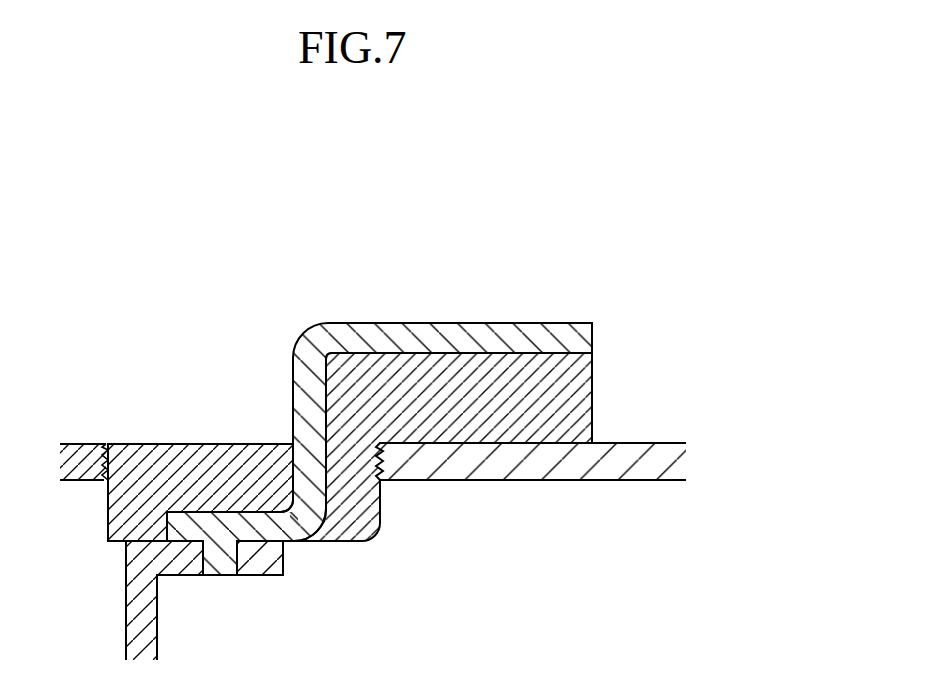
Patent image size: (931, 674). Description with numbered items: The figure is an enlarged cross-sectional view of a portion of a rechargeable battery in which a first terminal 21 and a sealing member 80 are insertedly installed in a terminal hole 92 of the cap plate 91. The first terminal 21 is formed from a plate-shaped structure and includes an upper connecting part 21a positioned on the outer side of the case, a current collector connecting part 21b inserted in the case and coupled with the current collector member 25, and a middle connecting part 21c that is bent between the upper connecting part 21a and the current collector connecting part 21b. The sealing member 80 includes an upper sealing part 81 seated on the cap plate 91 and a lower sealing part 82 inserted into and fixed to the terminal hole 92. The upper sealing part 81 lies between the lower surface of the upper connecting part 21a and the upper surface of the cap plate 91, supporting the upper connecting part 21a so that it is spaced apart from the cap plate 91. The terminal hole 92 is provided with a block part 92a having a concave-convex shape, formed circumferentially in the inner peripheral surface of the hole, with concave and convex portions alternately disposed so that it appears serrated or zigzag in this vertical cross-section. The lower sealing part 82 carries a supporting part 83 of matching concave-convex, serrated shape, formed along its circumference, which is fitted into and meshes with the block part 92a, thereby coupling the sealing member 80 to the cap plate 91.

The first terminal 21 is at (427, 316).
The upper connecting part 21a is at (508, 337).
The current collector connecting part 21b is at (245, 528).
The middle connecting part 21c is at (308, 402).
The current collector member 25 is at (142, 607).
The sealing member 80 is at (200, 434).
The upper sealing part 81 is at (575, 395).
The lower sealing part 82 is at (180, 468).
The supporting part 83 is at (102, 466).
The cap plate 91 is at (535, 467).
The terminal hole 92 is at (107, 452).
The block part 92a is at (380, 472).